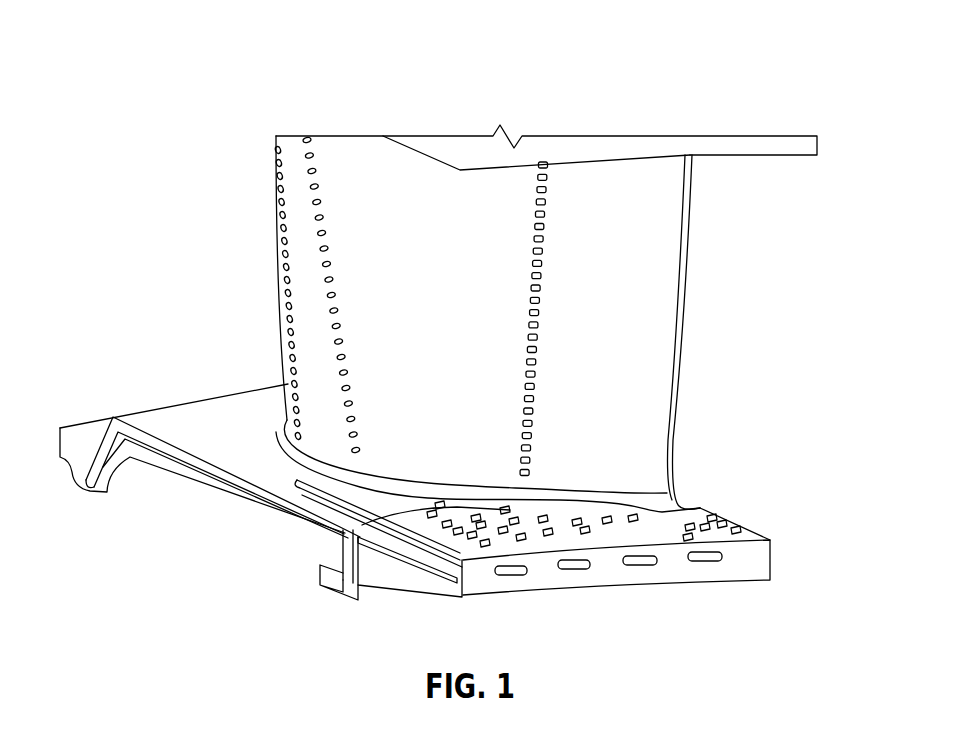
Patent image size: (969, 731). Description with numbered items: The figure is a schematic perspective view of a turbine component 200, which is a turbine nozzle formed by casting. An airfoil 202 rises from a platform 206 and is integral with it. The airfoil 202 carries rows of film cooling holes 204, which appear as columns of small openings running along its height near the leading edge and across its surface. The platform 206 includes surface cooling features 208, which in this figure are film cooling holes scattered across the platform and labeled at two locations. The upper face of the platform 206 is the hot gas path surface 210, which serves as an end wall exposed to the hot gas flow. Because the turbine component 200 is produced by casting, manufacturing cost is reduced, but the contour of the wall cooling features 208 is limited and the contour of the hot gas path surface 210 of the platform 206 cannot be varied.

The turbine component 200 is at (765, 88).
The airfoil 202 is at (655, 245).
The film cooling holes 204 is at (535, 375).
The platform 206 is at (540, 563).
The surface cooling features 208 is at (707, 512).
The hot gas path surface 210 is at (213, 420).